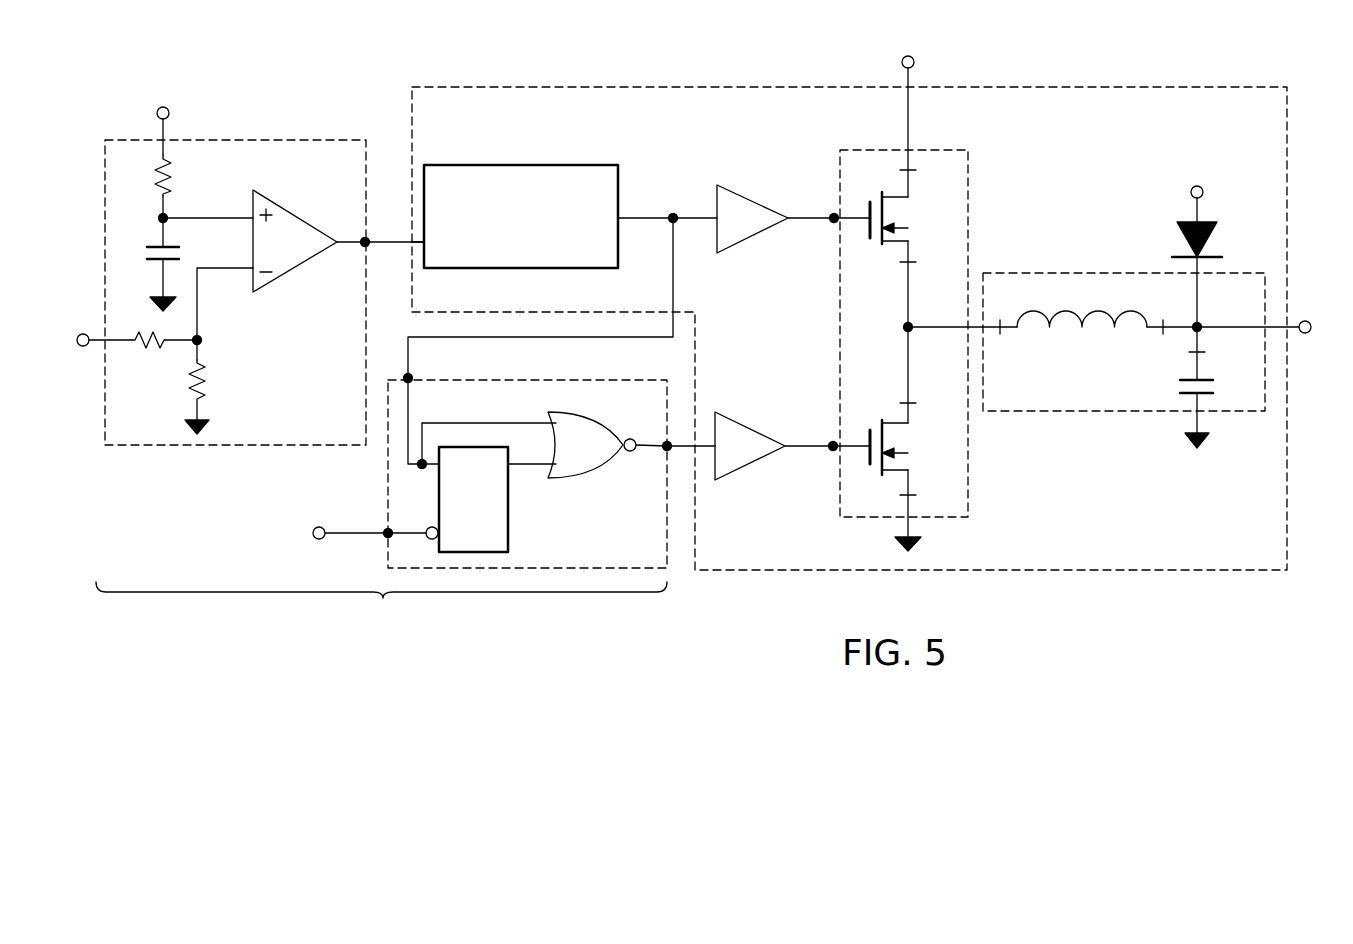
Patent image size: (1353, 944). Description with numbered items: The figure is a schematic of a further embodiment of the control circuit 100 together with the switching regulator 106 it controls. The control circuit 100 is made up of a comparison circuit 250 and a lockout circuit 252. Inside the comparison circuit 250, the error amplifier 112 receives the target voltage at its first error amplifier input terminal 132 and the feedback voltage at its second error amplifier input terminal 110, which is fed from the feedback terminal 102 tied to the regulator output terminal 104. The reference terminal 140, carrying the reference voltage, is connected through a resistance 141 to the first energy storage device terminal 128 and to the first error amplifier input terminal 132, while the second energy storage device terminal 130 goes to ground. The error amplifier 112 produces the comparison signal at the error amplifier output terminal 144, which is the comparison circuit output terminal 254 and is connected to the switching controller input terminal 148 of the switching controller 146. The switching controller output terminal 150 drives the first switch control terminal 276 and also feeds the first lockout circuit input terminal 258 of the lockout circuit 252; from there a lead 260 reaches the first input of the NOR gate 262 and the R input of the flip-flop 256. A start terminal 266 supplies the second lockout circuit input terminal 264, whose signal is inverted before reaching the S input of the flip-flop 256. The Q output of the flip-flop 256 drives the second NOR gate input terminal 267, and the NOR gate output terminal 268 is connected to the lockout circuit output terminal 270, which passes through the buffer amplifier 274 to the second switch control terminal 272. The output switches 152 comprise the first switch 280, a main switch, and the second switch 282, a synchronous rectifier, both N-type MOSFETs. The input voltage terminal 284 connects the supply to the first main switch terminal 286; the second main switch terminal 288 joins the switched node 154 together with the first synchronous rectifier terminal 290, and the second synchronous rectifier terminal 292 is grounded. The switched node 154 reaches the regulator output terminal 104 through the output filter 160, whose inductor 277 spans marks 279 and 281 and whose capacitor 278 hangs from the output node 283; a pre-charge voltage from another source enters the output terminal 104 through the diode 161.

The control circuit 100 is at (381, 607).
The feedback terminal 102 is at (135, 371).
The switching regulator output terminal 104 is at (1270, 329).
The switching regulator 106 is at (790, 135).
The second error amplifier input terminal 110 is at (225, 289).
The error amplifier 112 is at (311, 248).
The first energy storage device terminal 128 is at (141, 221).
The second energy storage device terminal 130 is at (147, 279).
The first error amplifier input terminal 132 is at (208, 203).
The reference terminal 140 is at (180, 113).
The resistance 141 is at (186, 175).
The error amplifier output terminal 144 is at (340, 263).
The switching controller 146 is at (509, 255).
The switching controller input terminal 148 is at (439, 244).
The switching controller output terminal 150 is at (667, 205).
The output switches 152 is at (895, 362).
The switched node 154 is at (952, 362).
The output filter 160 is at (1108, 395).
The diode 161 is at (1209, 241).
The comparison circuit 250 is at (323, 424).
The lockout circuit 252 is at (628, 553).
The comparison circuit output terminal 254 is at (393, 230).
The flip-flop 256 is at (491, 510).
The first lockout circuit input terminal 258 is at (539, 300).
The NOR gate input line 260 is at (482, 423).
The NOR gate 262 is at (601, 455).
The second lockout circuit input terminal 264 is at (391, 521).
The start terminal 266 is at (314, 538).
The second NOR gate input terminal 267 is at (532, 484).
The NOR gate output terminal 268 is at (636, 430).
The lockout circuit output terminal 270 is at (660, 463).
The second switch control terminal 272 is at (827, 458).
The buffer amplifier 274 is at (726, 446).
The first switch control terminal 276 is at (793, 219).
The inductor 277 is at (1082, 307).
The capacitor 278 is at (1220, 412).
The inductor first terminal 279 is at (1009, 343).
The first switch 280 is at (916, 218).
The inductor second terminal 281 is at (1167, 343).
The second switch 282 is at (916, 447).
The output node 283 is at (1224, 352).
The input voltage terminal 284 is at (932, 107).
The first main switch terminal 286 is at (931, 171).
The second main switch terminal 288 is at (931, 284).
The first synchronous rectifier terminal 290 is at (931, 404).
The second synchronous rectifier terminal 292 is at (929, 510).